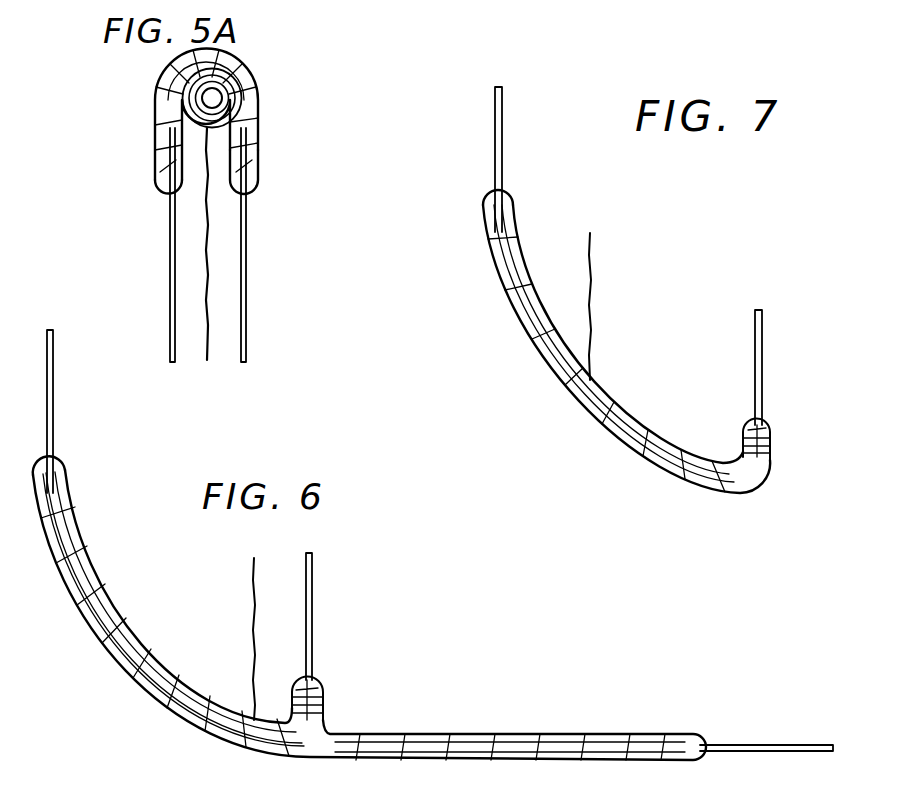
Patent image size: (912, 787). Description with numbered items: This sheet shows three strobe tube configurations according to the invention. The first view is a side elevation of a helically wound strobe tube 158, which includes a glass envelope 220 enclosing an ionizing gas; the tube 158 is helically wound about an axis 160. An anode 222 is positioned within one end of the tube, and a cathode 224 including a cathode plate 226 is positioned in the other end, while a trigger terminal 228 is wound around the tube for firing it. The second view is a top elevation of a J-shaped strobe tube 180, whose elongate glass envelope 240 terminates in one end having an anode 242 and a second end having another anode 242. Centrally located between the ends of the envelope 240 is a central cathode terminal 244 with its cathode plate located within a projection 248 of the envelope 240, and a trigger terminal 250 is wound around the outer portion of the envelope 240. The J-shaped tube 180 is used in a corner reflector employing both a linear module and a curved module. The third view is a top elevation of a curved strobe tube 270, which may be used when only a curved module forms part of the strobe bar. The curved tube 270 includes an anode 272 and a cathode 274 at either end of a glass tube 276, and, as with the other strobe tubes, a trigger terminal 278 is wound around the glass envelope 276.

In FIG. 5A, the helically wound strobe tube 158 is at (276, 147).
In FIG. 5A, the axis 160 is at (215, 97).
In FIG. 5A, the glass envelope 220 is at (262, 83).
In FIG. 5A, the anode 222 is at (169, 256).
In FIG. 5A, the cathode 224 is at (248, 253).
In FIG. 5A, the cathode plate 226 is at (261, 168).
In FIG. 5A, the trigger terminal 228 is at (208, 347).
In FIG. 6, the J-shaped strobe tube 180 is at (352, 648).
In FIG. 6, the glass envelope 240 is at (113, 616).
In FIG. 6, the anode 242 is at (55, 398).
In FIG. 6, the central cathode terminal 244 is at (314, 580).
In FIG. 6, the projection 248 is at (325, 684).
In FIG. 6, the trigger terminal 250 is at (255, 558).
In FIG. 7, the curved strobe tube 270 is at (673, 478).
In FIG. 7, the anode 272 is at (505, 148).
In FIG. 7, the cathode 274 is at (765, 358).
In FIG. 7, the glass tube 276 is at (622, 413).
In FIG. 7, the trigger terminal 278 is at (594, 272).